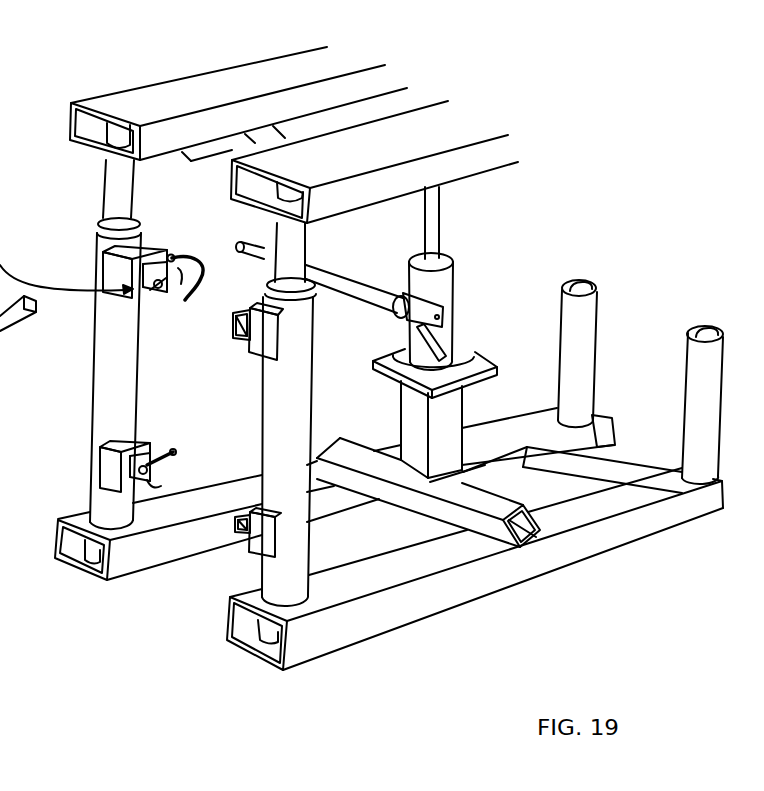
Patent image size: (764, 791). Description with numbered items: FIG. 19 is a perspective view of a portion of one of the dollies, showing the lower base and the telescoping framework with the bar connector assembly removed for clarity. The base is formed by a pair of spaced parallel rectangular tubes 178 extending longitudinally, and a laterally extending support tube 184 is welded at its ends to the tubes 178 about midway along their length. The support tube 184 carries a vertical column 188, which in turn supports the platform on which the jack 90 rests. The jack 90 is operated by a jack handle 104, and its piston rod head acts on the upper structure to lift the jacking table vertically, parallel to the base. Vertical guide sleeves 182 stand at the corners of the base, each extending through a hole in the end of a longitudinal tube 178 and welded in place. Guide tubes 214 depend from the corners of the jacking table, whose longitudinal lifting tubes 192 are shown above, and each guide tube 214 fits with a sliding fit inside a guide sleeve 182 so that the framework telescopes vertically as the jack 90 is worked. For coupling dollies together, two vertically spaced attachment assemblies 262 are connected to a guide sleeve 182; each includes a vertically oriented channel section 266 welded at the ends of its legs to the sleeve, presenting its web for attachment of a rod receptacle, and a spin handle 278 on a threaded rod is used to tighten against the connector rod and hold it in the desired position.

The longitudinal lifting tube 192 is at (228, 82).
The guide tube 214 is at (118, 185).
The attachment assembly 262 is at (173, 240).
The channel section 266 is at (117, 272).
The spin handle 278 is at (50, 305).
The jack handle 104 is at (362, 292).
The jack 90 is at (484, 294).
The vertical column 188 is at (415, 414).
The support tube 184 is at (442, 503).
The rectangular tube 178 is at (125, 558).
The guide sleeve 182 is at (698, 388).